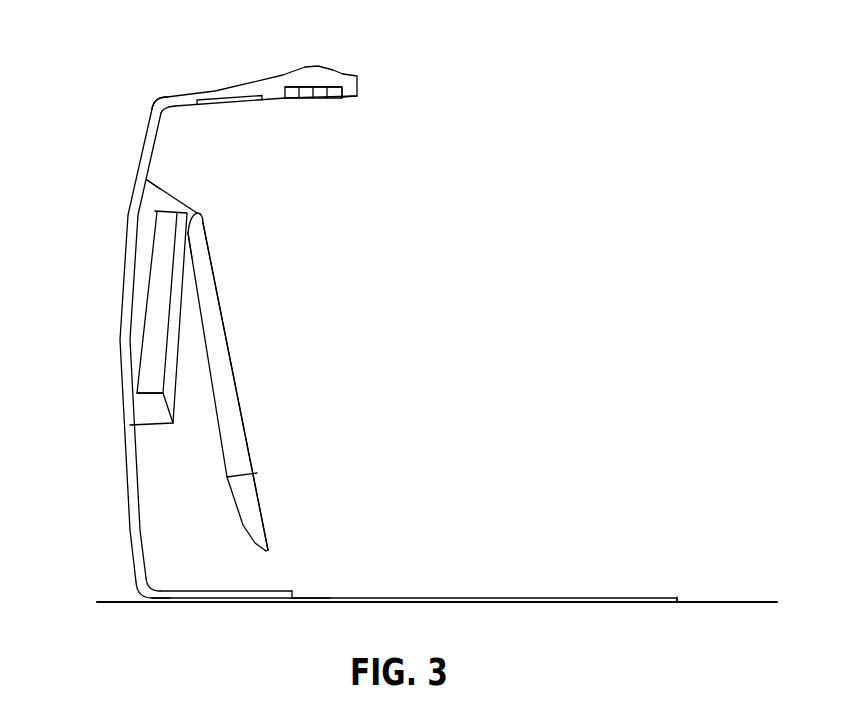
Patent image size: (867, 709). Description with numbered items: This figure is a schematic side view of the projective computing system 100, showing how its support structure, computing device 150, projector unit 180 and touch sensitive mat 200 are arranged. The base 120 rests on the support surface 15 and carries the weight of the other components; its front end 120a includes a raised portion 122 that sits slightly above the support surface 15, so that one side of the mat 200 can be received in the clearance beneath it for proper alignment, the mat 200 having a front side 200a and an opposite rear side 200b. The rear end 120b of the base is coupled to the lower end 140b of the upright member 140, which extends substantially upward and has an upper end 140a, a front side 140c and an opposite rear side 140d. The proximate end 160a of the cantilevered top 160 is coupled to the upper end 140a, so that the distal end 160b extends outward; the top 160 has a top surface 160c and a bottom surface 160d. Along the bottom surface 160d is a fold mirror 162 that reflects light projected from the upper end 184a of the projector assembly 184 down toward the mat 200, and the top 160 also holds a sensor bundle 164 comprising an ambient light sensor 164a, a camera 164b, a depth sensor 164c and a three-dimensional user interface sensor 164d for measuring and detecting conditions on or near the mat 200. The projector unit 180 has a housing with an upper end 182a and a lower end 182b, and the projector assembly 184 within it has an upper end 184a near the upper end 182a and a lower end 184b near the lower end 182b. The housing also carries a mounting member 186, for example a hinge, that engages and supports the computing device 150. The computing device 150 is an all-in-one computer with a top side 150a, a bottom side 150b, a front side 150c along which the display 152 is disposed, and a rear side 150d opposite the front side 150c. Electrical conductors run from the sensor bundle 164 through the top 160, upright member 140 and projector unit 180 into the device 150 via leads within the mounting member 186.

The projective computing system 100 is at (527, 172).
The support surface 15 is at (713, 600).
The touch sensitive mat 200 is at (643, 596).
The front side 200a is at (680, 600).
The rear side 200b is at (267, 604).
The upright member 140 is at (119, 398).
The upper end 140a is at (144, 107).
The lower end 140b is at (139, 590).
The front side 140c is at (139, 500).
The rear side 140d is at (128, 500).
The base 120 is at (240, 590).
The front end 120a is at (321, 596).
The rear end 120b is at (155, 602).
The raised portion 122 is at (292, 591).
The top 160 is at (236, 54).
The proximate end 160a is at (159, 98).
The distal end 160b is at (363, 79).
The top surface 160c is at (206, 88).
The bottom surface 160d is at (188, 111).
The fold mirror 162 is at (215, 107).
The sensor bundle 164 is at (285, 101).
The ambient light sensor 164a is at (336, 78).
The camera 164b is at (321, 87).
The depth sensor 164c is at (306, 87).
The user interface sensor 164d is at (292, 87).
The projector unit 180 is at (126, 340).
The upper end 182a is at (155, 183).
The lower end 182b is at (162, 428).
The projector assembly 184 is at (148, 291).
The upper end 184a is at (149, 204).
The lower end 184b is at (167, 405).
The computing device 150 is at (236, 303).
The top side 150a is at (200, 213).
The bottom side 150b is at (268, 553).
The front side 150c is at (281, 386).
The display 152 is at (230, 362).
The arm tip line 150d is at (257, 474).
The mounting member 186 is at (195, 240).